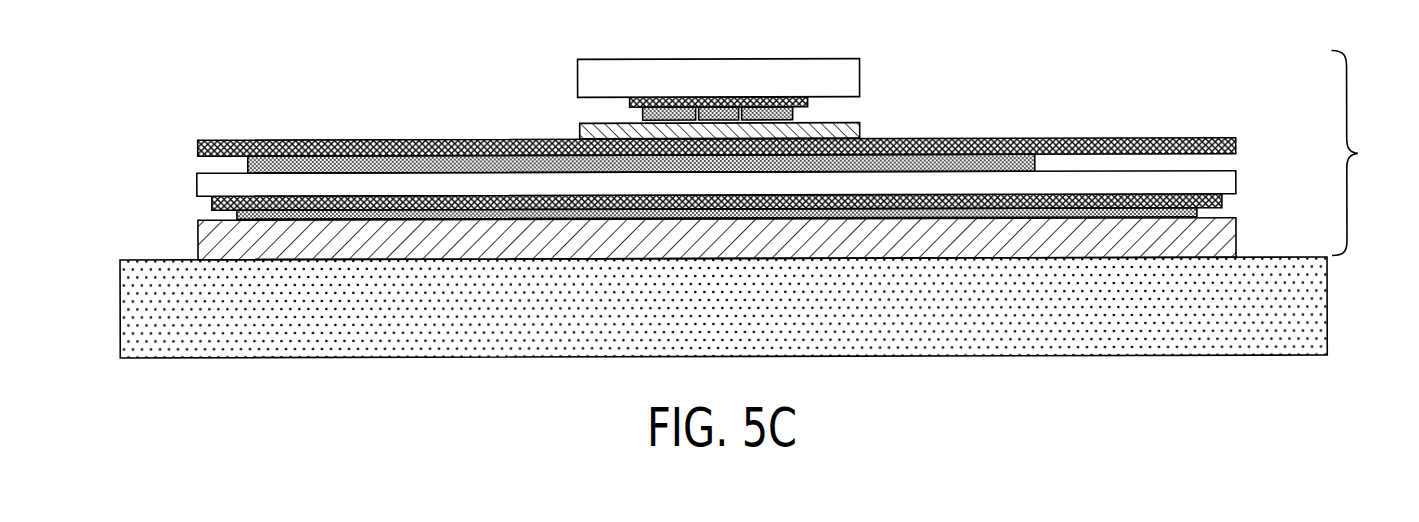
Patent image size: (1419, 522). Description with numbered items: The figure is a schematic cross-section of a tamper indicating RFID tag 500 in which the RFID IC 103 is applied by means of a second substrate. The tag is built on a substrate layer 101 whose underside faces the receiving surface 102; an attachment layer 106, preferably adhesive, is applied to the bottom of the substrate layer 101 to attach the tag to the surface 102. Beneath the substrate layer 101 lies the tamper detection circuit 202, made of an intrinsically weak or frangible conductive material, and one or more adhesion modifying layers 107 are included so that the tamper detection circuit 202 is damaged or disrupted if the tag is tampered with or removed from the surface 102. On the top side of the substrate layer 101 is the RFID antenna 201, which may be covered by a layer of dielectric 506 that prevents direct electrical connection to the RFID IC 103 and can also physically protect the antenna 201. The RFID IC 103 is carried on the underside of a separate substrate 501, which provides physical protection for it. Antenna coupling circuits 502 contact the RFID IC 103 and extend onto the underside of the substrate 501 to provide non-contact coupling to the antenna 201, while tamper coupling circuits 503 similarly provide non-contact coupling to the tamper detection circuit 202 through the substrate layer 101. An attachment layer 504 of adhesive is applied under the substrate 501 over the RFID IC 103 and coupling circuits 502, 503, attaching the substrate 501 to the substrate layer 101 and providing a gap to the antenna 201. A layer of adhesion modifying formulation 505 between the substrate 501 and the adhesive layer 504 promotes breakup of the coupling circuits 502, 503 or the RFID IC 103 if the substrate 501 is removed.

The substrate layer 101 is at (197, 185).
The receiving surface 102 is at (120, 308).
The RFID IC 103 is at (716, 100).
The attachment layer 106 is at (1236, 225).
The adhesion modifying layer 107 is at (237, 214).
The RFID antenna 201 is at (247, 164).
The tamper detection circuit 202 is at (1200, 212).
The tamper indicating RFID tag 500 is at (1366, 152).
The separate substrate 501 is at (578, 74).
The antenna coupling circuit 502 is at (643, 114).
The tamper coupling circuit 503 is at (793, 117).
The attachment layer 504 is at (580, 132).
The adhesion modifying formulation layer 505 is at (808, 104).
The dielectric layer 506 is at (338, 139).